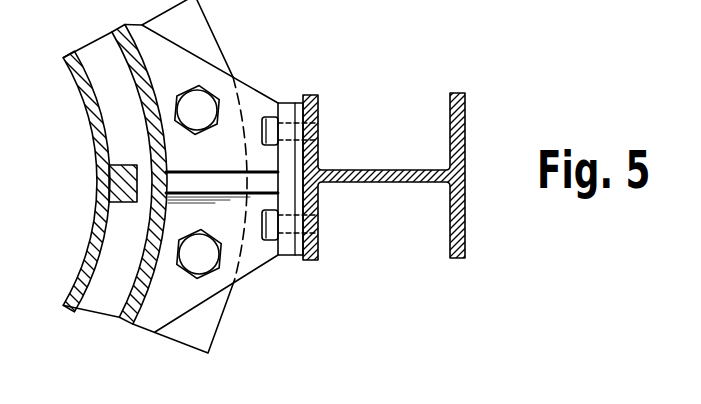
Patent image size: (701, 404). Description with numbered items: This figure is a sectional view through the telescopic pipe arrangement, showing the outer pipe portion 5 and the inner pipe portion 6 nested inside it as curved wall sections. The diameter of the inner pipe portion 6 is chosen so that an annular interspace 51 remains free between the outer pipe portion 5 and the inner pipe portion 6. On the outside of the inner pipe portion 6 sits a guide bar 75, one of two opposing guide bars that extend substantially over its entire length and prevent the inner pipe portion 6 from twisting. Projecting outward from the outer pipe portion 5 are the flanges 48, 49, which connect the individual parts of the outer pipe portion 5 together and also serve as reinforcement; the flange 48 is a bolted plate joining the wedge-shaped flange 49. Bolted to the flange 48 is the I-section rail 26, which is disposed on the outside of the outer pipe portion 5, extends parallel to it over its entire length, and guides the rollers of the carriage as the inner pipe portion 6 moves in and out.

The outer pipe portion 5 is at (125, 322).
The inner pipe portion 6 is at (88, 250).
The rail 26 is at (465, 110).
The flange 48 is at (253, 102).
The flange 49 is at (203, 41).
The annular interspace 51 is at (107, 298).
The guide bar 75 is at (121, 165).